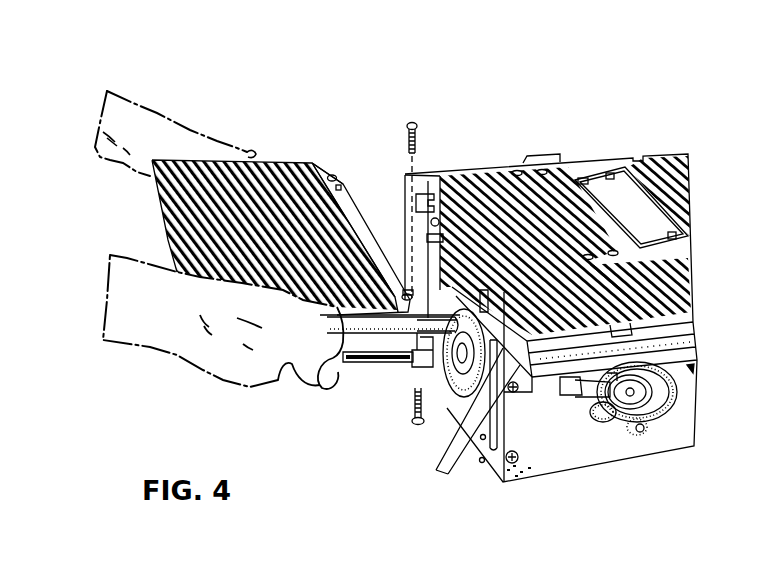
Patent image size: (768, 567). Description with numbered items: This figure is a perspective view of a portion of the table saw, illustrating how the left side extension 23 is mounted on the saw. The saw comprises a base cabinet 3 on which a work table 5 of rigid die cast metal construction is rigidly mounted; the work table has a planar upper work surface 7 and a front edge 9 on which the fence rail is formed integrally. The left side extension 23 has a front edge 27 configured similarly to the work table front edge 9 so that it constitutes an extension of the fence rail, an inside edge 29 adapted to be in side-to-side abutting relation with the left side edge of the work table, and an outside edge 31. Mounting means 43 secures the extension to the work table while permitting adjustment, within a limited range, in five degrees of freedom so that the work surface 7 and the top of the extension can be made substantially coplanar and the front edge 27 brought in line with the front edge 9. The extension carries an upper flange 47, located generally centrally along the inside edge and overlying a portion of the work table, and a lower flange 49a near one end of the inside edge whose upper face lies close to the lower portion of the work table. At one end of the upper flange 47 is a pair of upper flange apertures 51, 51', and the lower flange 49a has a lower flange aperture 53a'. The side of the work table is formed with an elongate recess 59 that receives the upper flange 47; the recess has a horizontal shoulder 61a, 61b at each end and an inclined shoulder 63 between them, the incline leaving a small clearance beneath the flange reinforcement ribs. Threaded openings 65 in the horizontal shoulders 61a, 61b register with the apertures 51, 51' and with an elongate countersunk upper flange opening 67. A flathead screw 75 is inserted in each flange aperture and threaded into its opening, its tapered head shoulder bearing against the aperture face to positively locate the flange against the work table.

The base cabinet 3 is at (571, 480).
The work table 5 is at (748, 412).
The upper work surface 7 is at (642, 257).
The front edge 9 is at (693, 370).
The left side extension 23 is at (158, 207).
The front edge 27 is at (361, 369).
The inside edge 29 is at (359, 199).
The outside edge 31 is at (170, 225).
The mounting means 43 is at (403, 397).
The upper flange 47 is at (349, 186).
The lower flange 49a is at (427, 352).
The upper flange aperture 51 is at (327, 159).
The upper flange aperture 51' is at (354, 163).
The lower flange aperture 53a' is at (373, 369).
The elongate recess 59 is at (438, 238).
The horizontal shoulder 61a is at (517, 394).
The horizontal shoulder 61b is at (448, 226).
The inclined shoulder 63 is at (470, 268).
The threaded opening 65 is at (435, 222).
The upper flange opening 67 is at (409, 366).
The flathead screw 75 is at (418, 132).